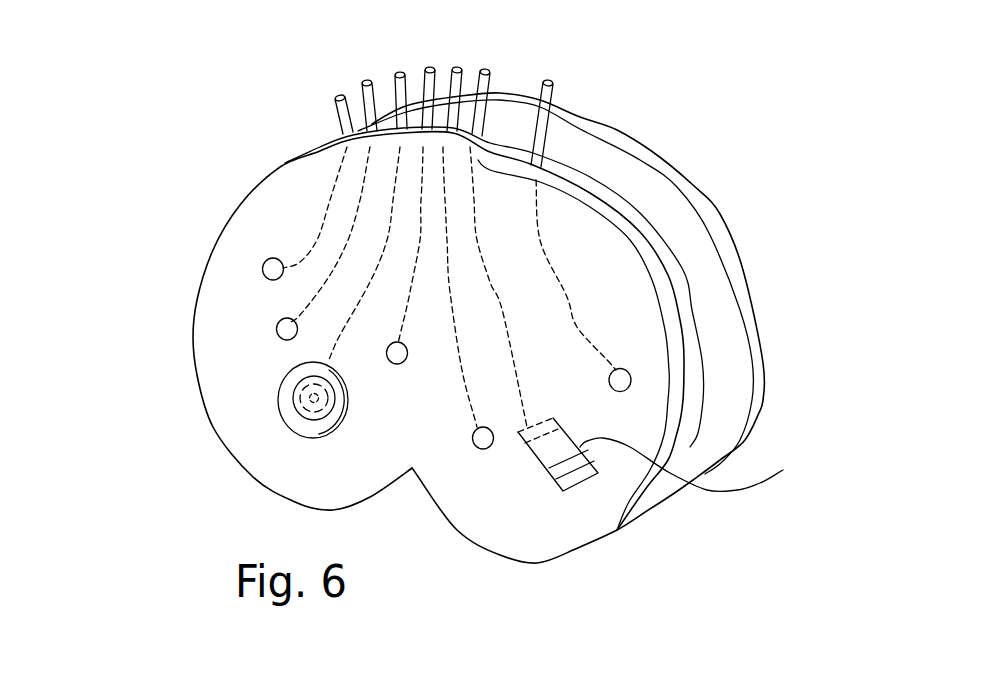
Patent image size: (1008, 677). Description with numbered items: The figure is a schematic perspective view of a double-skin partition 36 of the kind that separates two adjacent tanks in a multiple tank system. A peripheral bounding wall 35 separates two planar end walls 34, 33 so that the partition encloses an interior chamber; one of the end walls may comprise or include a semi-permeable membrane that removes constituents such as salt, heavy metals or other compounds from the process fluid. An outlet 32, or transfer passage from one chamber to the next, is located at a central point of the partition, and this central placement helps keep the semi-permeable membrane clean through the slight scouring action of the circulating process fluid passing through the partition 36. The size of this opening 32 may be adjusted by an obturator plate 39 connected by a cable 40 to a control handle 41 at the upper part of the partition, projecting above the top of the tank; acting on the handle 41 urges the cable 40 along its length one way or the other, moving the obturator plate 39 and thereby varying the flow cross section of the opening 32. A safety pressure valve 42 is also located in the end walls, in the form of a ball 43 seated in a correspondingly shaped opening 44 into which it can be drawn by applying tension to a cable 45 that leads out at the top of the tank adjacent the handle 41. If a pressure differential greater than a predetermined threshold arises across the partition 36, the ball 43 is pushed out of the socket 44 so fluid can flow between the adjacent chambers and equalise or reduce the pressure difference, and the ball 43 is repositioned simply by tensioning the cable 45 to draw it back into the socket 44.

The outlet 32 is at (597, 328).
The end wall 33 is at (757, 367).
The end wall 34 is at (223, 247).
The peripheral bounding wall 35 is at (687, 430).
The partition 36 is at (710, 167).
The obturator plate 39 is at (537, 467).
The cable 40 is at (520, 368).
The control handle 41 is at (453, 83).
The safety pressure valve 42 is at (268, 376).
The ball 43 is at (297, 397).
The opening 44 is at (300, 431).
The cable 45 is at (400, 73).